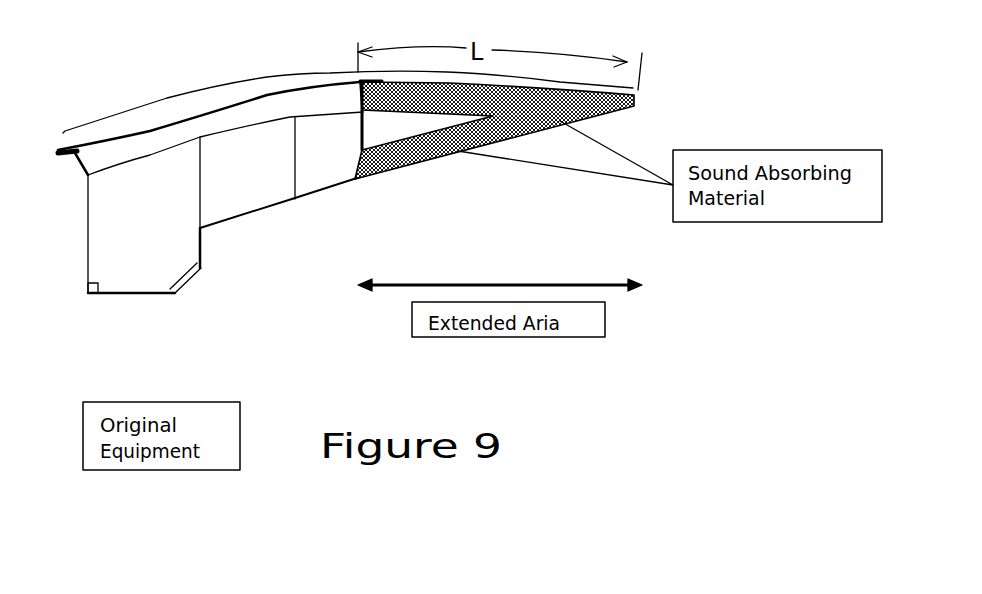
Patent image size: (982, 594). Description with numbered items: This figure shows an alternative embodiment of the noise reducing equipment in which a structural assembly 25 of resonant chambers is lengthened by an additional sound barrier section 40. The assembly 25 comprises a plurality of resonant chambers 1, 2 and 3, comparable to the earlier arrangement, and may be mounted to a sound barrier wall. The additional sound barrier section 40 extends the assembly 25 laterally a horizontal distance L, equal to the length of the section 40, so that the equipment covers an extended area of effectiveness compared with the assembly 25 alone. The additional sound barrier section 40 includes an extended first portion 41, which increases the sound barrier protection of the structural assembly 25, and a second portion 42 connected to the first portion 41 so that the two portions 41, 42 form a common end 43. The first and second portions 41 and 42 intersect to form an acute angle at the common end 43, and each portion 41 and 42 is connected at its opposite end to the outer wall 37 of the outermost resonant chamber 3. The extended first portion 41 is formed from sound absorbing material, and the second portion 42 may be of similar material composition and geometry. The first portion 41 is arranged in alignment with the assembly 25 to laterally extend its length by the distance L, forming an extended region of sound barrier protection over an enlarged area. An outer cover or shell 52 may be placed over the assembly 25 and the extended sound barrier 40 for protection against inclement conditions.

The resonant chamber 1 is at (107, 216).
The resonant chamber 2 is at (240, 182).
The outermost resonant chamber 3 is at (315, 167).
The structural assembly 25 is at (138, 287).
The outer wall 37 is at (362, 125).
The additional sound barrier section 40 is at (498, 83).
The extended first portion 41 is at (437, 102).
The second portion 42 is at (458, 150).
The common end 43 is at (559, 118).
The outer cover or shell 52 is at (102, 84).